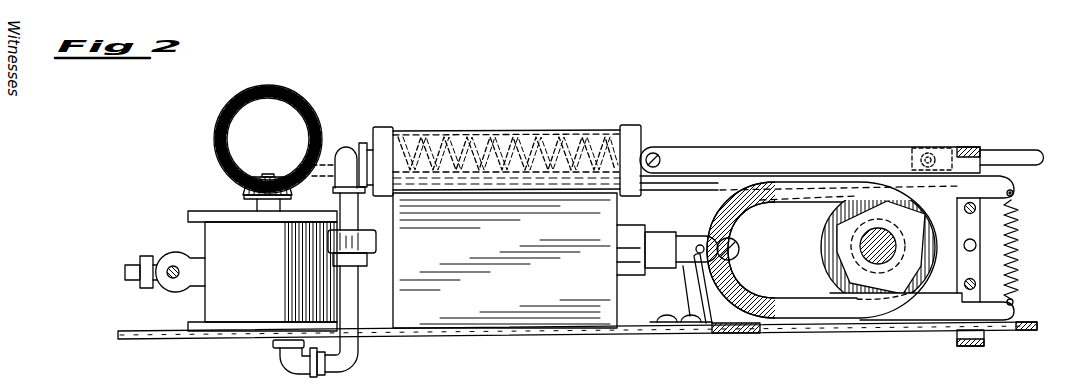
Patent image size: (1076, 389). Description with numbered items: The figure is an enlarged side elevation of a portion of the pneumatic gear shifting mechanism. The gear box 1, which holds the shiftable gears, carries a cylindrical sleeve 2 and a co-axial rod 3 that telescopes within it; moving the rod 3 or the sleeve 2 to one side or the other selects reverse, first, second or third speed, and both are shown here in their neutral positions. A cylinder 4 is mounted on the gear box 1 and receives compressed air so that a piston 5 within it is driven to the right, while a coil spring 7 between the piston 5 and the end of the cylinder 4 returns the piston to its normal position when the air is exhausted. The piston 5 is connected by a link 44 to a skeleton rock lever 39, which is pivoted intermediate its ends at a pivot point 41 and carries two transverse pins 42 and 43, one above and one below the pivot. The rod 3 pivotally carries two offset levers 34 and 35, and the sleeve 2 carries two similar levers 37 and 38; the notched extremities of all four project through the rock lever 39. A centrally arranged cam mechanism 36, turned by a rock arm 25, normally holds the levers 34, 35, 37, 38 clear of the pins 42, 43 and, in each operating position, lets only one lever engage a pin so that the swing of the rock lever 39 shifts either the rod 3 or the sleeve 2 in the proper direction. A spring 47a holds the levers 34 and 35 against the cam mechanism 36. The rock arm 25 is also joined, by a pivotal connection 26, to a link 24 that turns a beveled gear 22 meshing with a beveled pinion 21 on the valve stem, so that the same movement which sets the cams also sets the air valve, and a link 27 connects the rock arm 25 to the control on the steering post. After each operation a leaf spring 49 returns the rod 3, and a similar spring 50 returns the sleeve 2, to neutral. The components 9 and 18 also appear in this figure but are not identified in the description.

The gear box 1 is at (505, 260).
The cylindrical sleeve 2 is at (653, 240).
The co-axial rod 3 is at (685, 238).
The cylinder 4 is at (538, 130).
The piston 5 is at (410, 135).
The coil spring 7 is at (587, 165).
The solenoid coil 9 is at (262, 271).
The terminal 18 is at (180, 282).
The beveled pinion 21 is at (243, 187).
The beveled gear 22 is at (233, 140).
The link 24 is at (717, 182).
The rock arm 25 is at (922, 150).
The pivotal connection 26 is at (1003, 182).
The link 27 is at (1012, 150).
The lever 34 is at (850, 180).
The lever 35 is at (922, 259).
The cam mechanism 36 is at (845, 268).
The lever 37 is at (722, 217).
The lever 38 is at (722, 330).
The skeleton rock lever 39 is at (960, 333).
The pivot point 41 is at (977, 252).
The transverse pin 42 is at (984, 209).
The transverse pin 43 is at (985, 285).
The link 44 is at (693, 152).
The spring 47a is at (1017, 228).
The leaf spring 49 is at (697, 287).
The spring 50 is at (690, 304).